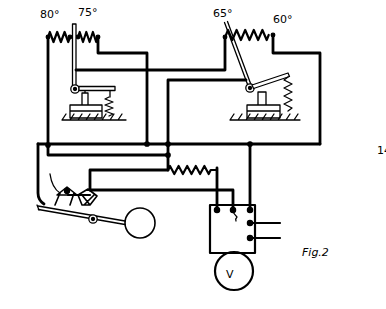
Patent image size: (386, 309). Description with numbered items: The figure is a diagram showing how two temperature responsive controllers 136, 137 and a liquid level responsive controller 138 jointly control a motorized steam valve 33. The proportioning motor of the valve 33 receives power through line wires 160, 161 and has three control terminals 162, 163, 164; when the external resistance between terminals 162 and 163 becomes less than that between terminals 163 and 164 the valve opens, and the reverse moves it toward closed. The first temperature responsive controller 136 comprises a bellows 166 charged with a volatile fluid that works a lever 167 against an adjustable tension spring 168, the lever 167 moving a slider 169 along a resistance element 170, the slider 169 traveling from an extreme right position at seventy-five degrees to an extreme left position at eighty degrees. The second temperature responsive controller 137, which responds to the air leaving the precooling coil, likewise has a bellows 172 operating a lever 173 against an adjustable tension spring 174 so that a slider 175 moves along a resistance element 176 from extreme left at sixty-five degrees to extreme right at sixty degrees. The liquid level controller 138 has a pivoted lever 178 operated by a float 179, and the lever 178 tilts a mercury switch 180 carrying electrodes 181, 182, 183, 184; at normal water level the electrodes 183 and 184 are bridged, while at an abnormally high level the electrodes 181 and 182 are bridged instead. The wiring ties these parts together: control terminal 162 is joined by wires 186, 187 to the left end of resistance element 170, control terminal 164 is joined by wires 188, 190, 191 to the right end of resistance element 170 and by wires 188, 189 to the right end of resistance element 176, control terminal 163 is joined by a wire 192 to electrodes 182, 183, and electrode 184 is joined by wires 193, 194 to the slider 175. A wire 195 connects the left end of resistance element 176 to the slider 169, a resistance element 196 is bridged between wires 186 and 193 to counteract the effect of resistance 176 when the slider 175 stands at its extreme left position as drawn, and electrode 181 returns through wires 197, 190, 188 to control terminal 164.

The motorized steam valve 33 is at (222, 243).
The temperature responsive controller 136 is at (120, 36).
The temperature responsive controller 137 is at (306, 35).
The liquid level responsive controller 138 is at (72, 238).
The line wire 160 is at (263, 221).
The line wire 161 is at (259, 240).
The control terminal 162 is at (210, 213).
The control terminal 163 is at (228, 217).
The control terminal 164 is at (255, 207).
The bellows 166 is at (72, 103).
The lever 167 is at (100, 80).
The adjustable tension spring 168 is at (110, 104).
The slider 169 is at (77, 60).
The resistance element 170 is at (64, 38).
The bellows 172 is at (246, 105).
The lever 173 is at (282, 72).
The adjustable tension spring 174 is at (291, 101).
The slider 175 is at (243, 61).
The resistance element 176 is at (250, 22).
The pivoted lever 178 is at (100, 229).
The float 179 is at (137, 240).
The mercury switch 180 is at (39, 207).
The electrode 181 is at (36, 191).
The electrode 182 is at (50, 174).
The electrode 183 is at (69, 192).
The electrode 184 is at (92, 199).
The wire 186 is at (218, 185).
The wire 187 is at (47, 128).
The wire 188 is at (251, 166).
The wire 189 is at (293, 148).
The wire 190 is at (200, 144).
The wire 191 is at (146, 134).
The wire 192 is at (172, 194).
The wire 193 is at (108, 186).
The wire 194 is at (169, 113).
The wire 195 is at (175, 71).
The resistance element 196 is at (190, 182).
The wire 197 is at (77, 145).